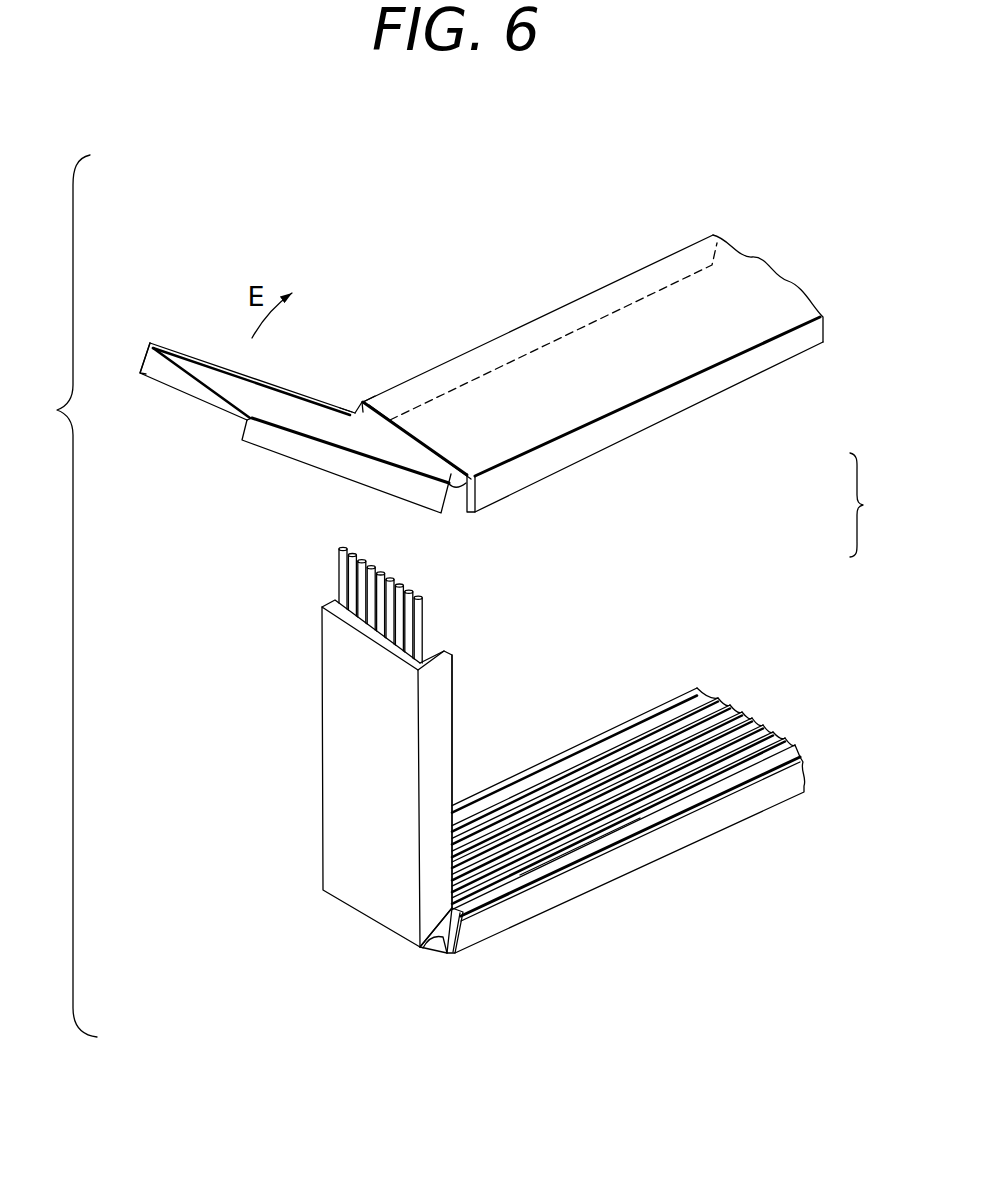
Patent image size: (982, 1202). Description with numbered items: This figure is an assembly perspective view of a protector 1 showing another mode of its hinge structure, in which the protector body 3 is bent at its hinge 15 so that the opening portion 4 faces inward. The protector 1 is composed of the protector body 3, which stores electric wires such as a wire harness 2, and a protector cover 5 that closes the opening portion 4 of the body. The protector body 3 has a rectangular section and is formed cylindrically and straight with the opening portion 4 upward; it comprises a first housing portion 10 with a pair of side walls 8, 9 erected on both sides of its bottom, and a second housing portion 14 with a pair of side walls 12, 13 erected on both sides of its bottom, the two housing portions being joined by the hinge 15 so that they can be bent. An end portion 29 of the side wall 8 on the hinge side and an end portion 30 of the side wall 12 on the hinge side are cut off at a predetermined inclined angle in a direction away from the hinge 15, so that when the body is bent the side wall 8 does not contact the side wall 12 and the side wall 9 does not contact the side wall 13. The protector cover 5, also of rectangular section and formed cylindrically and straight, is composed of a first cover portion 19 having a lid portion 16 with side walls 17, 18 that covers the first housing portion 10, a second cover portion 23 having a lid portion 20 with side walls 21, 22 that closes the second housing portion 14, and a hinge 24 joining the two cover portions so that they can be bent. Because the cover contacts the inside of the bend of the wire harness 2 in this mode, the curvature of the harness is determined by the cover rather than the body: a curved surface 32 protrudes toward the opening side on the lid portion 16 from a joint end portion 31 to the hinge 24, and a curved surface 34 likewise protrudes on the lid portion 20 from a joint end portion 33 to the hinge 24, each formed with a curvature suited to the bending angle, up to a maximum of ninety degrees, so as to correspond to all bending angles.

The protector 1 is at (868, 505).
The wire harness 2 is at (587, 793).
The protector body 3 is at (694, 674).
The opening portion 4 is at (641, 788).
The protector cover 5 is at (601, 368).
The side wall 8 is at (583, 873).
The side wall 9 is at (650, 720).
The first housing portion 10 is at (637, 789).
The side wall 12 is at (445, 716).
The side wall 13 is at (330, 603).
The second housing portion 14 is at (388, 794).
The hinge 15 is at (438, 954).
The lid portion 16 is at (642, 318).
The side wall 17 is at (663, 405).
The side wall 18 is at (537, 330).
The first cover portion 19 is at (729, 229).
The lid portion 20 is at (295, 399).
The side wall 21 is at (270, 440).
The side wall 22 is at (160, 376).
The second cover portion 23 is at (198, 345).
The hinge 24 is at (457, 489).
The end portion 29 is at (464, 926).
The end portion 30 is at (432, 950).
The joint end portion 31 is at (363, 400).
The curved surface 32 is at (370, 388).
The joint end portion 33 is at (350, 410).
The curved surface 34 is at (336, 405).